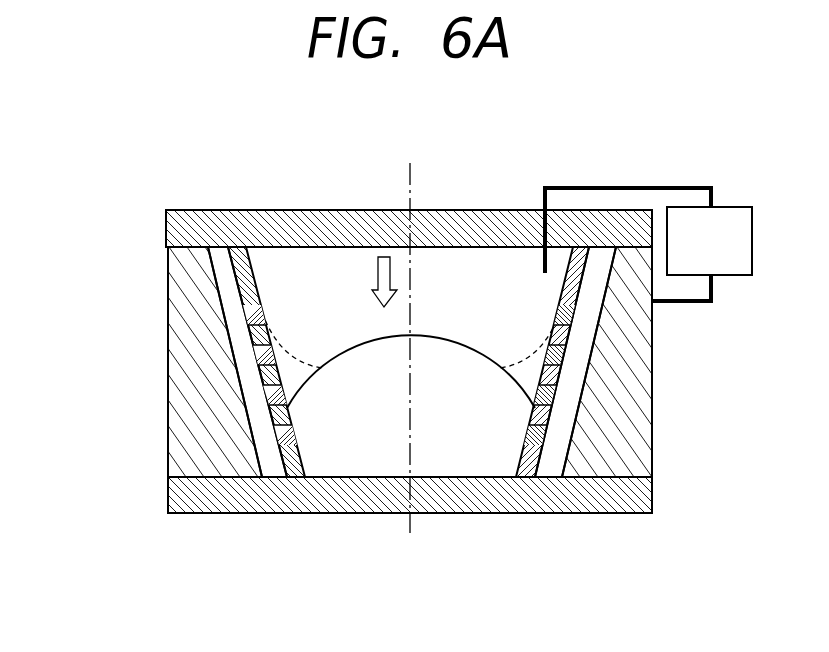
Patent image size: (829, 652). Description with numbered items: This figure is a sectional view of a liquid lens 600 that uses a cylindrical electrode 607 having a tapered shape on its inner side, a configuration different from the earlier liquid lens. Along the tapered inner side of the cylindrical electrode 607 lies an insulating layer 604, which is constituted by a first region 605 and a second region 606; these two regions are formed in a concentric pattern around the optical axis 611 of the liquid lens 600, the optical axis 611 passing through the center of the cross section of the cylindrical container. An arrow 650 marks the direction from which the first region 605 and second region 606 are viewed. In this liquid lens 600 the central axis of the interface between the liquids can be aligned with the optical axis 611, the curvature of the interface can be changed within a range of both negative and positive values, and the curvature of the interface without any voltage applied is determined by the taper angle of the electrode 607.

The liquid lens 600 is at (142, 141).
The insulating layer 604 is at (225, 283).
The first region 605 is at (240, 340).
The second region 606 is at (262, 390).
The cylindrical electrode 607 is at (203, 442).
The optical axis 611 is at (412, 174).
The arrow 650 is at (360, 282).